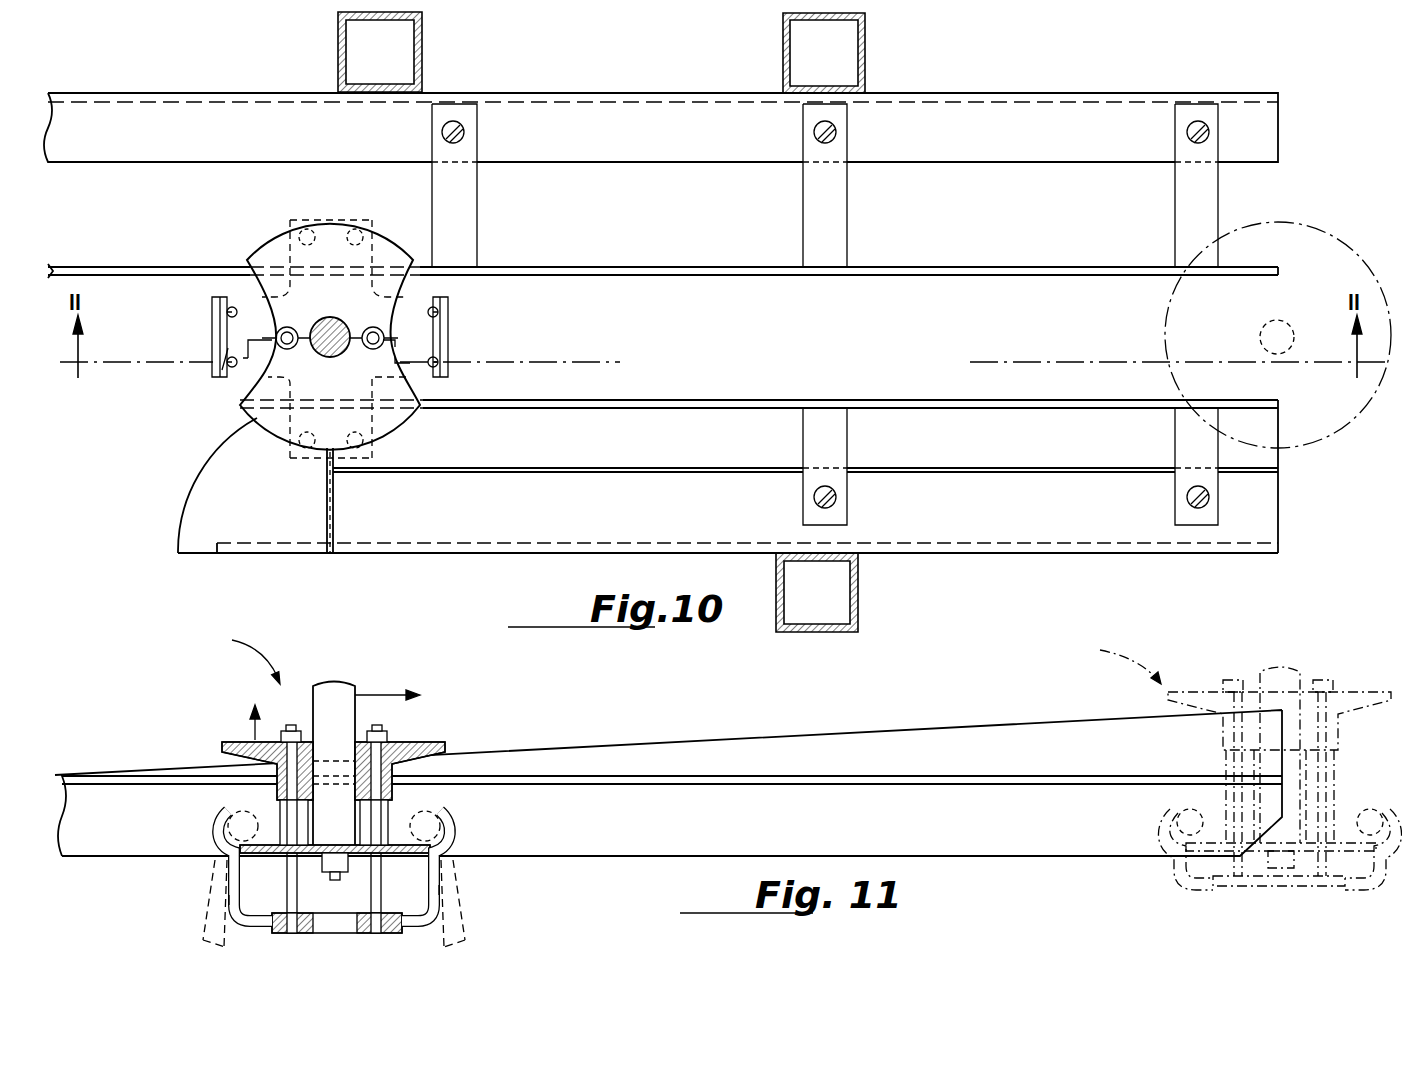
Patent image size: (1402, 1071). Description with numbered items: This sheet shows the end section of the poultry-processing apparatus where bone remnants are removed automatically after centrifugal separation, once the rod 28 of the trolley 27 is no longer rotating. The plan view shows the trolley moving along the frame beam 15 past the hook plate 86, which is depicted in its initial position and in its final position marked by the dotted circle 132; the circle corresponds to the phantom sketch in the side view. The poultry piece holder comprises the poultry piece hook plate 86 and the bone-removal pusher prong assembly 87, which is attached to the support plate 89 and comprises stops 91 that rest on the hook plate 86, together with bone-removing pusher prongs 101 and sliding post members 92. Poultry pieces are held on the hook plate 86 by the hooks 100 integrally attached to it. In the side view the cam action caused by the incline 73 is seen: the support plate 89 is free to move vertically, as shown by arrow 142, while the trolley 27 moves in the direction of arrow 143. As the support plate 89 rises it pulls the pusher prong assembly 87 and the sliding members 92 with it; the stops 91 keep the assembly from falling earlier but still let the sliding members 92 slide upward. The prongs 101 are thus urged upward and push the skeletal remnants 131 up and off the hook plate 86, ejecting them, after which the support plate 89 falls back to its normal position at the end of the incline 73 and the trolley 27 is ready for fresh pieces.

In FIG. 10, the frame beam 15 is at (900, 113).
In FIG. 11, the trolley 27 is at (682, 656).
In FIG. 10, the rod 28 is at (325, 352).
In FIG. 11, the rod 28 is at (330, 700).
In FIG. 11, the incline 73 is at (846, 748).
In FIG. 10, the poultry piece hook plate 86 is at (243, 370).
In FIG. 11, the poultry piece hook plate 86 is at (262, 850).
In FIG. 11, the bone-removal pusher prong assembly 87 is at (387, 925).
In FIG. 10, the support plate 89 is at (277, 420).
In FIG. 11, the support plate 89 is at (423, 740).
In FIG. 11, the stops 91 is at (288, 810).
In FIG. 11, the sliding post members 92 is at (372, 880).
In FIG. 10, the hooks 100 is at (212, 338).
In FIG. 11, the hooks 100 is at (220, 821).
In FIG. 10, the bone-removing pusher prongs 101 is at (226, 313).
In FIG. 11, the bone-removing pusher prongs 101 is at (236, 902).
In FIG. 11, the skeletal poultry remnants 131 is at (213, 884).
In FIG. 10, the dotted circle 132 is at (1322, 272).
In FIG. 11, the arrow 142 is at (253, 731).
In FIG. 11, the arrow 143 is at (380, 693).